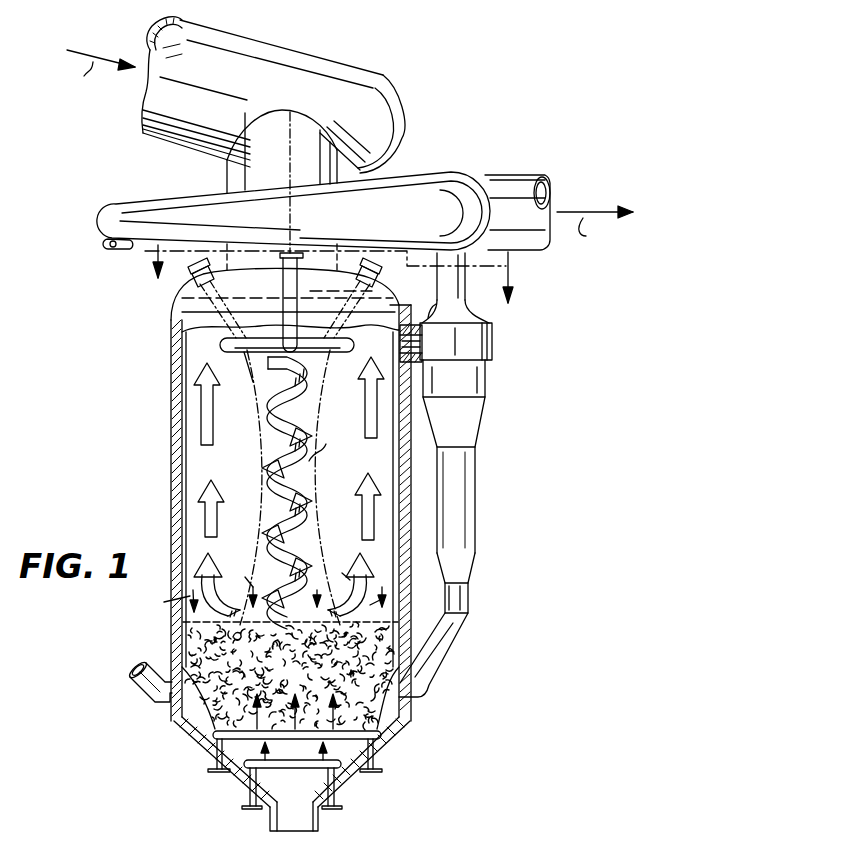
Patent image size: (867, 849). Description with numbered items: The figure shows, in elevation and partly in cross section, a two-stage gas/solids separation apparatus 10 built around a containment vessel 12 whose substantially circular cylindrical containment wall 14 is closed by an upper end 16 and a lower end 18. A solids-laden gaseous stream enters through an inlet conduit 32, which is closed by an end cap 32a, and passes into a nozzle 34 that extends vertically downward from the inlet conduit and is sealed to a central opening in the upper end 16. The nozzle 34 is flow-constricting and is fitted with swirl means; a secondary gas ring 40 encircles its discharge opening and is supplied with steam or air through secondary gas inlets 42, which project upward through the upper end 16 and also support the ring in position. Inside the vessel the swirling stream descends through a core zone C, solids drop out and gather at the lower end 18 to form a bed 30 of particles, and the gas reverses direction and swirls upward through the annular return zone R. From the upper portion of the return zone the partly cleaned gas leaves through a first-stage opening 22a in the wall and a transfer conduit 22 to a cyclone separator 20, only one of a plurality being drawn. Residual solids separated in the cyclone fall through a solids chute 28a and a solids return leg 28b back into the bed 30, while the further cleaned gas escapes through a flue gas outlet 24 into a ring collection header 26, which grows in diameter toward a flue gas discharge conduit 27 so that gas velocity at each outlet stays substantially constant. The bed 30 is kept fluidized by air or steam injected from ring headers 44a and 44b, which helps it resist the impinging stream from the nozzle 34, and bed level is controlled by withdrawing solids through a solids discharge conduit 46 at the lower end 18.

The gas/solids separation apparatus 10 is at (160, 447).
The containment vessel 12 is at (171, 488).
The containment wall 14 is at (171, 398).
The upper end 16 is at (176, 300).
The lower end 18 is at (178, 738).
The cyclone separator 20 is at (490, 390).
The transfer conduit 22 is at (442, 338).
The first-stage opening 22a is at (400, 342).
The flue gas outlet 24 is at (108, 248).
The ring collection header 26 is at (412, 187).
The flue gas discharge conduit 27 is at (516, 188).
The solids chute 28a is at (458, 496).
The solids return leg 28b is at (455, 655).
The bed 30 is at (290, 676).
The inlet conduit 32 is at (334, 64).
The end cap 32a is at (397, 112).
The nozzle 34 is at (236, 176).
The secondary gas ring 40 is at (249, 372).
The secondary gas inlet 42 is at (365, 230).
The ring header 44a is at (372, 775).
The ring header 44b is at (336, 829).
The solids discharge conduit 46 is at (268, 823).